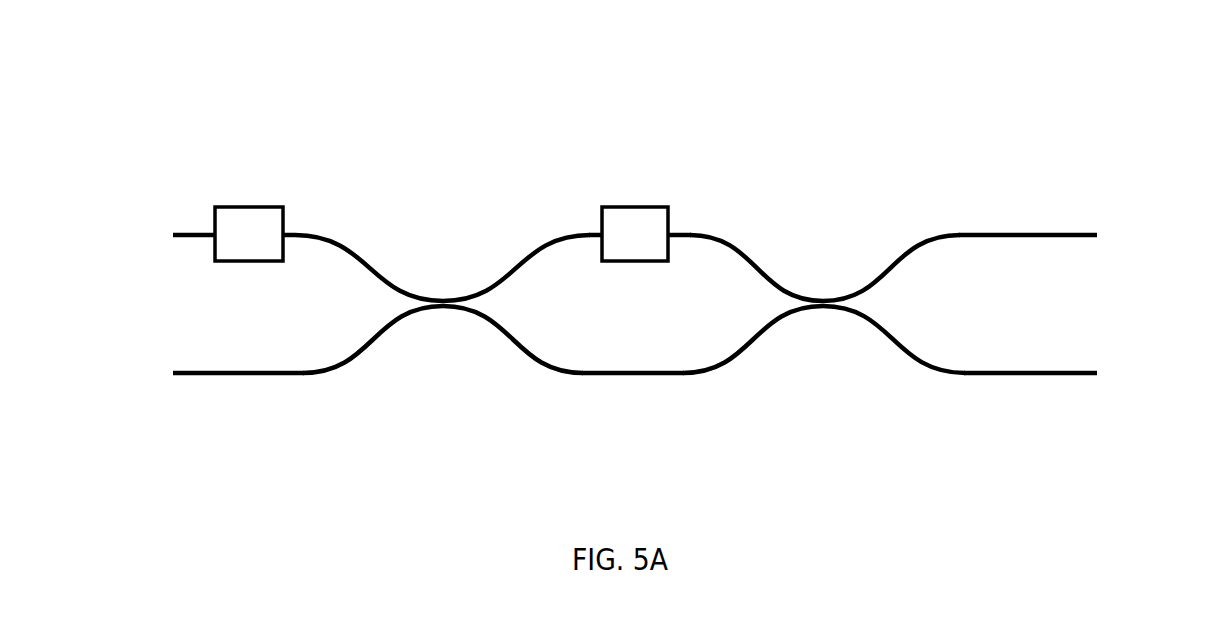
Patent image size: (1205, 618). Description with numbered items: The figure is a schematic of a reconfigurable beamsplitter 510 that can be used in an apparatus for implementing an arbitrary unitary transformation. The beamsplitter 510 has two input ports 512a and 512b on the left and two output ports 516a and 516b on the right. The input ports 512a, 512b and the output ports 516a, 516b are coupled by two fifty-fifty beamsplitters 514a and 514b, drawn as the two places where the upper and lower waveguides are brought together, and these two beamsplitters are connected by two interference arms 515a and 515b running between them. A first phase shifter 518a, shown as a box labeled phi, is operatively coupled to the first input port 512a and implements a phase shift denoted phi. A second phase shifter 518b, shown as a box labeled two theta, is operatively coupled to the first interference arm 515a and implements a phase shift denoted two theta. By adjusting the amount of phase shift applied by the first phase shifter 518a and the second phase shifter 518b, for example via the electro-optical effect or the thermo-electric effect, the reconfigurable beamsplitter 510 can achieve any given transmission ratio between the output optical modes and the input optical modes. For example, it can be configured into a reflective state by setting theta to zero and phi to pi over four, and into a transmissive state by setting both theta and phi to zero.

The reconfigurable beamsplitter 510 is at (220, 98).
The first input port 512a is at (192, 238).
The second input port 512b is at (192, 375).
The first 50:50 beamsplitter 514a is at (436, 315).
The second 50:50 beamsplitter 514b is at (824, 315).
The first interference arm 515a is at (703, 236).
The second interference arm 515b is at (663, 376).
The first output port 516a is at (1043, 238).
The second output port 516b is at (1052, 375).
The first phase shifter 518a is at (248, 206).
The second phase shifter 518b is at (632, 206).